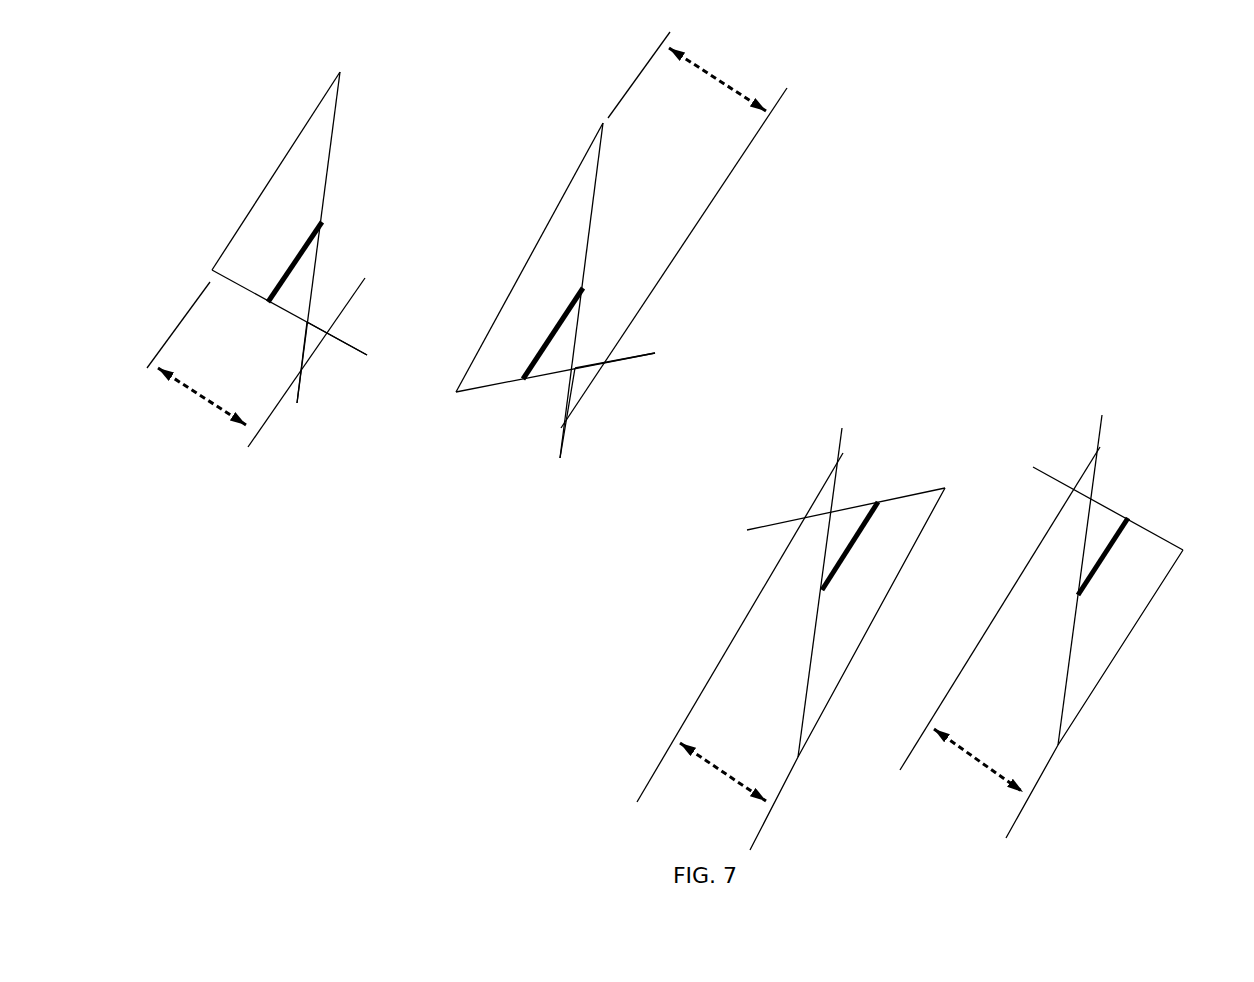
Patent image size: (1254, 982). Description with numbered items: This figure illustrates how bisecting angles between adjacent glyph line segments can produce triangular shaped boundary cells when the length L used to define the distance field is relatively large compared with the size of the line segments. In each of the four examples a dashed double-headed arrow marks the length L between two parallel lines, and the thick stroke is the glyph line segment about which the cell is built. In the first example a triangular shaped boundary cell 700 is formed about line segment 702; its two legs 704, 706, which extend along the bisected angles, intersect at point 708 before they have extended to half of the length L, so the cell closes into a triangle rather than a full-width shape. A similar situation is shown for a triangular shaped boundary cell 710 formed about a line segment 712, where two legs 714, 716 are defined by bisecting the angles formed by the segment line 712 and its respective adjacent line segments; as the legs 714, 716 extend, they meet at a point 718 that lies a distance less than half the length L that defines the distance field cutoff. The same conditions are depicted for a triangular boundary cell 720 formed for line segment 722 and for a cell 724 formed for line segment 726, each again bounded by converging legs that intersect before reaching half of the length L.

The triangular shaped boundary cell 700 is at (278, 108).
The line segment 702 is at (298, 255).
The leg 704 is at (328, 177).
The leg 706 is at (242, 288).
The point 708 is at (313, 318).
The triangular shaped boundary cell 710 is at (560, 152).
The line segment 712 is at (555, 328).
The leg 714 is at (592, 235).
The leg 716 is at (495, 387).
The point 718 is at (578, 360).
The triangular boundary cell 720 is at (803, 460).
The line segment 722 is at (860, 540).
The cell 724 is at (1160, 455).
The line segment 726 is at (1108, 553).